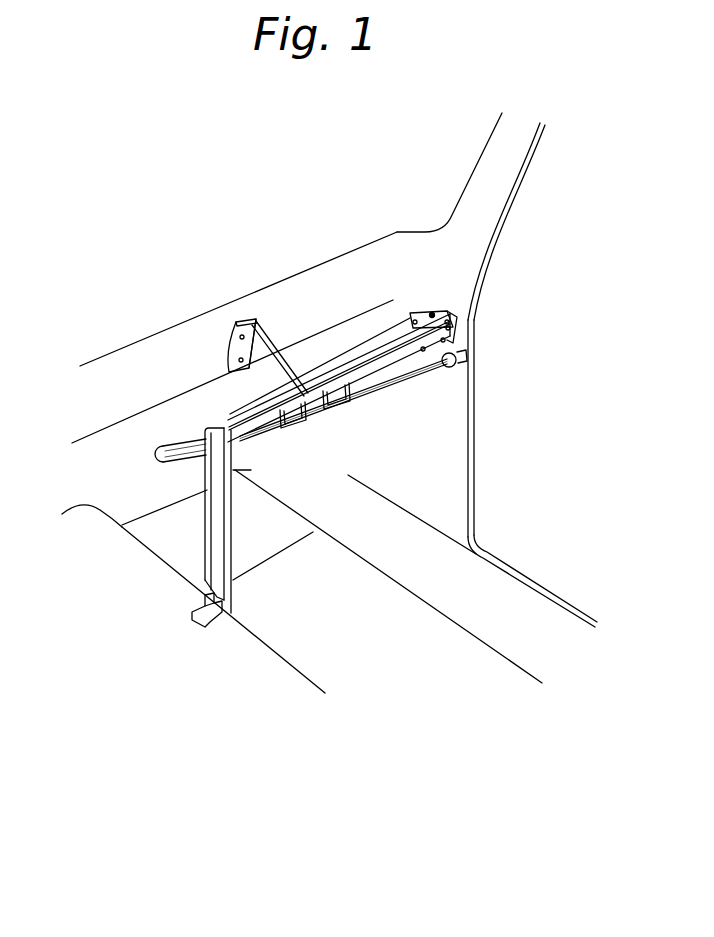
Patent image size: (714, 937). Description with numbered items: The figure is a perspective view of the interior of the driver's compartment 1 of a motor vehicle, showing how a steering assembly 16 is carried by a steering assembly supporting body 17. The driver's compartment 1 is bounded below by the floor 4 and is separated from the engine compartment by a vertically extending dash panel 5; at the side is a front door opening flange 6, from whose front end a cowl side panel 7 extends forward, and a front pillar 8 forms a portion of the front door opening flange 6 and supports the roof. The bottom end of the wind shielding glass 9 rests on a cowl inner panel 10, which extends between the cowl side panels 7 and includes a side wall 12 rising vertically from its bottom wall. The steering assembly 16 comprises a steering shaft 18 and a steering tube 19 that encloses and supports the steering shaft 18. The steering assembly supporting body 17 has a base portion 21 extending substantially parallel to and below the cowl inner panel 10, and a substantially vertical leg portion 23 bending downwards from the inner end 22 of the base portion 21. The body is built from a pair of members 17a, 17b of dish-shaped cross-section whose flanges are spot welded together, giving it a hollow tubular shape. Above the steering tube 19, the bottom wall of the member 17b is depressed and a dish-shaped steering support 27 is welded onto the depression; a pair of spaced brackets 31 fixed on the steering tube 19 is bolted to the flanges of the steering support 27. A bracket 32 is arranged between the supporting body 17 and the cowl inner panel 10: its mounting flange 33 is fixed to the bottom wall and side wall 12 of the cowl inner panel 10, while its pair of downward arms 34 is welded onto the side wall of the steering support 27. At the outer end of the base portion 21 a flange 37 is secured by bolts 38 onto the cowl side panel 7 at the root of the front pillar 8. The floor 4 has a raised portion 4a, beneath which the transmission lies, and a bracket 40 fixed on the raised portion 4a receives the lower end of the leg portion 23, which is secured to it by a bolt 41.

The driver's compartment 1 is at (375, 640).
The floor 4 is at (317, 658).
The raised portion 4a is at (243, 640).
The dash panel 5 is at (114, 495).
The front door opening flange 6 is at (470, 480).
The cowl side panel 7 is at (450, 418).
The front pillar 8 is at (497, 187).
The wind shielding glass 9 is at (443, 165).
The cowl inner panel 10 is at (188, 352).
The side wall 12 is at (283, 318).
The steering assembly 16 is at (425, 400).
The steering assembly supporting body 17 is at (357, 350).
The member 17a is at (404, 334).
The member 17b is at (407, 385).
The steering shaft 18 is at (464, 350).
The steering tube 19 is at (372, 387).
The base portion 21 is at (387, 343).
The inner end 22 is at (205, 425).
The leg portion 23 is at (213, 508).
The steering support 27 is at (340, 367).
The brackets 31 is at (265, 420).
The bracket 32 is at (258, 397).
The mounting flange 33 is at (250, 320).
The arms 34 is at (300, 425).
The flange 37 is at (433, 311).
The bolts 38 is at (412, 320).
The bracket 40 is at (188, 588).
The bolt 41 is at (167, 445).